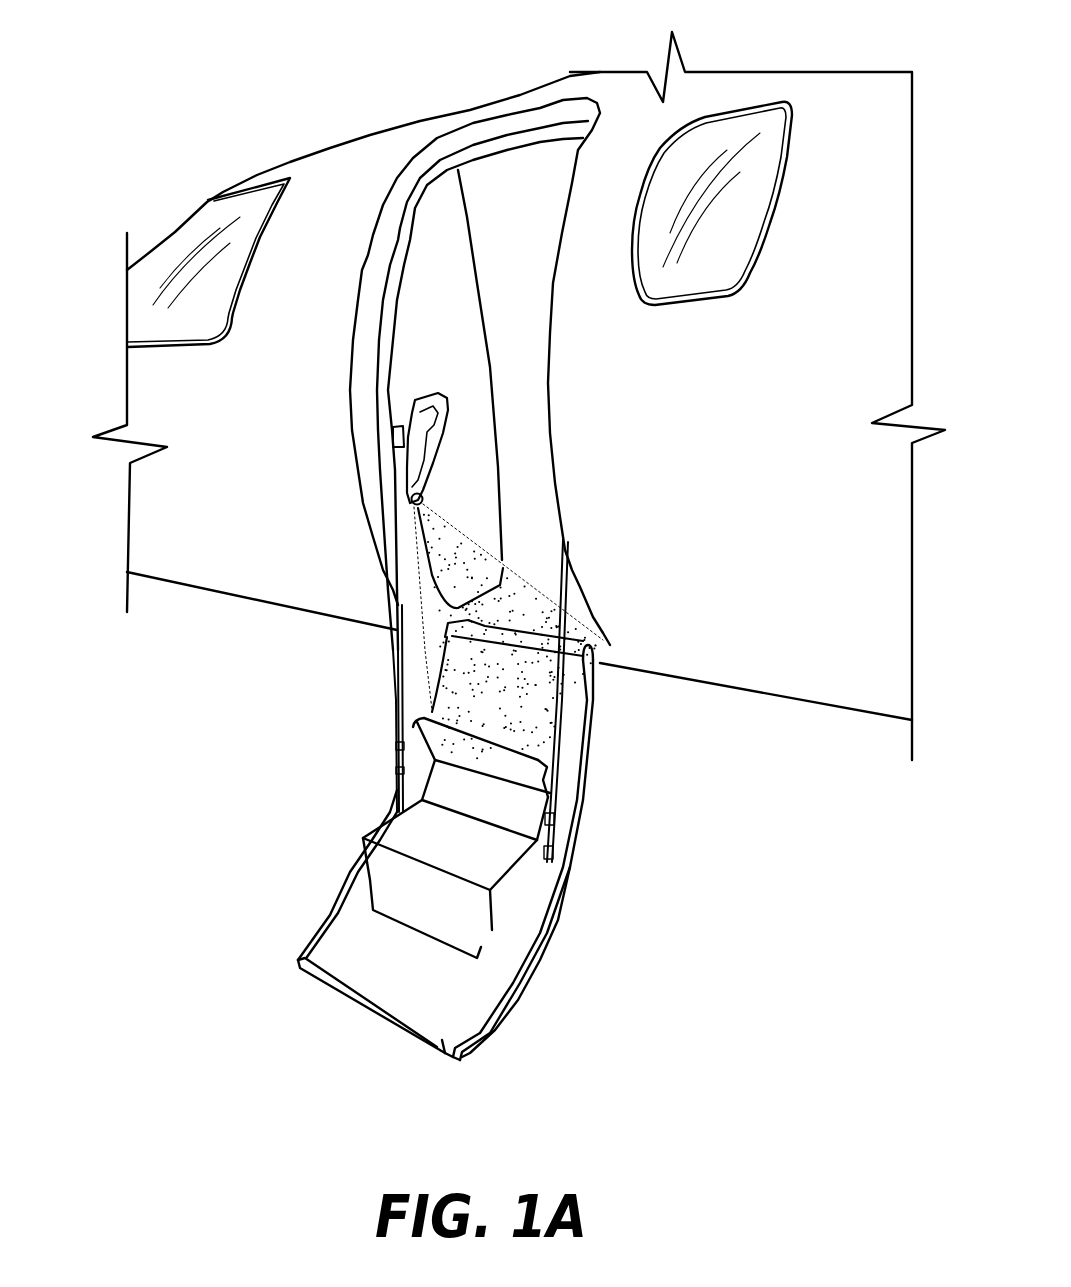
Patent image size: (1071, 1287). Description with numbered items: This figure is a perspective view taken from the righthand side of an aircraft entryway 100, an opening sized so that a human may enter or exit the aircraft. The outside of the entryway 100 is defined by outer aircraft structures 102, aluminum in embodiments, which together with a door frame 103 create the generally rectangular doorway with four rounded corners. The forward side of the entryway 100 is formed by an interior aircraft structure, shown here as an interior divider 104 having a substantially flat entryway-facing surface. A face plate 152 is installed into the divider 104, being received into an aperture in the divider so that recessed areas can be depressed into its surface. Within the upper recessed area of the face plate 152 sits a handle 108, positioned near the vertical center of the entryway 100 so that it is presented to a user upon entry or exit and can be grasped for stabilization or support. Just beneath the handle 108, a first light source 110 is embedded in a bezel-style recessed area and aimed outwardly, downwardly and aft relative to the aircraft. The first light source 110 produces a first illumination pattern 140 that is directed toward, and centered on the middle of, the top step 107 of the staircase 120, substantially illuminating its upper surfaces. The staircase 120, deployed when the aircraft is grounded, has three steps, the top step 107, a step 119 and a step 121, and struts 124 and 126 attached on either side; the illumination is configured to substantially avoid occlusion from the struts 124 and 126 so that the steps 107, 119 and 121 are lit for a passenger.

The aircraft entryway 100 is at (522, 128).
The outer aircraft structures 102 is at (380, 245).
The door frame 103 is at (387, 335).
The interior divider 104 is at (428, 378).
The handle 108 is at (402, 455).
The face plate 152 is at (415, 487).
The first light source 110 is at (412, 497).
The first illumination pattern 140 is at (483, 668).
The strut 124 is at (411, 665).
The strut 126 is at (566, 680).
The top step 107 is at (413, 720).
The step 119 is at (422, 832).
The step 121 is at (378, 943).
The staircase 120 is at (627, 890).